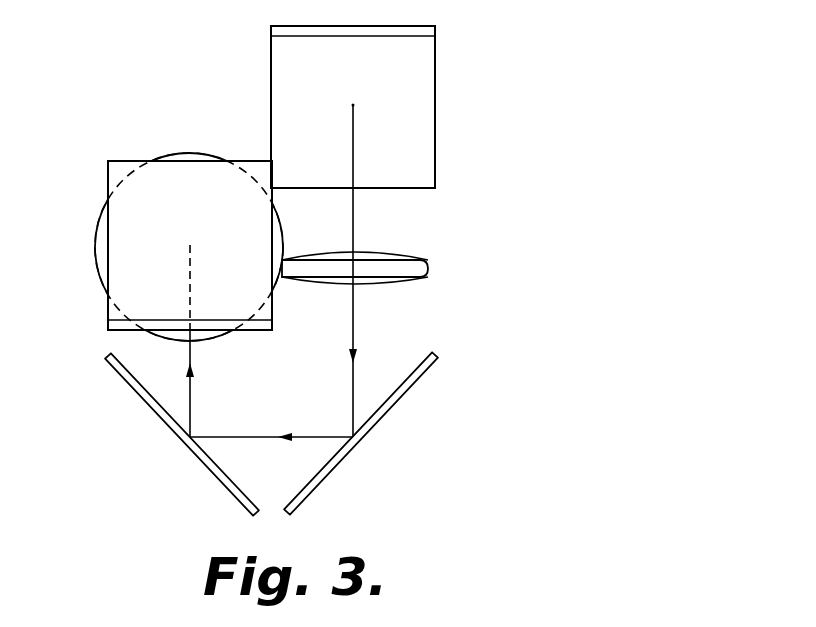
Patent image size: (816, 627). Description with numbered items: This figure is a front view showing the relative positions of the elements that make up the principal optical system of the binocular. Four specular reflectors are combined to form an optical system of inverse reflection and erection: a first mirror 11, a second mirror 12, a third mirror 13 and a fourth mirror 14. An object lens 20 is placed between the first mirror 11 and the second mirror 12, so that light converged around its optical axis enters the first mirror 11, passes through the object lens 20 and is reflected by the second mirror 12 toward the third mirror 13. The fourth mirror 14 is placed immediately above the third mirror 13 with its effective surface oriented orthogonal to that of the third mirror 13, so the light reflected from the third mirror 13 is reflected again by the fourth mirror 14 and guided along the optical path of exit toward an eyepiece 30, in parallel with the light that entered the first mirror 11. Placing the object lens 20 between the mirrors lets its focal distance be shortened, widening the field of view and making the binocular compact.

The first mirror 11 is at (425, 80).
The second mirror 12 is at (380, 420).
The third mirror 13 is at (162, 423).
The fourth mirror 14 is at (132, 257).
The object lens 20 is at (430, 264).
The eyepiece 30 is at (95, 252).